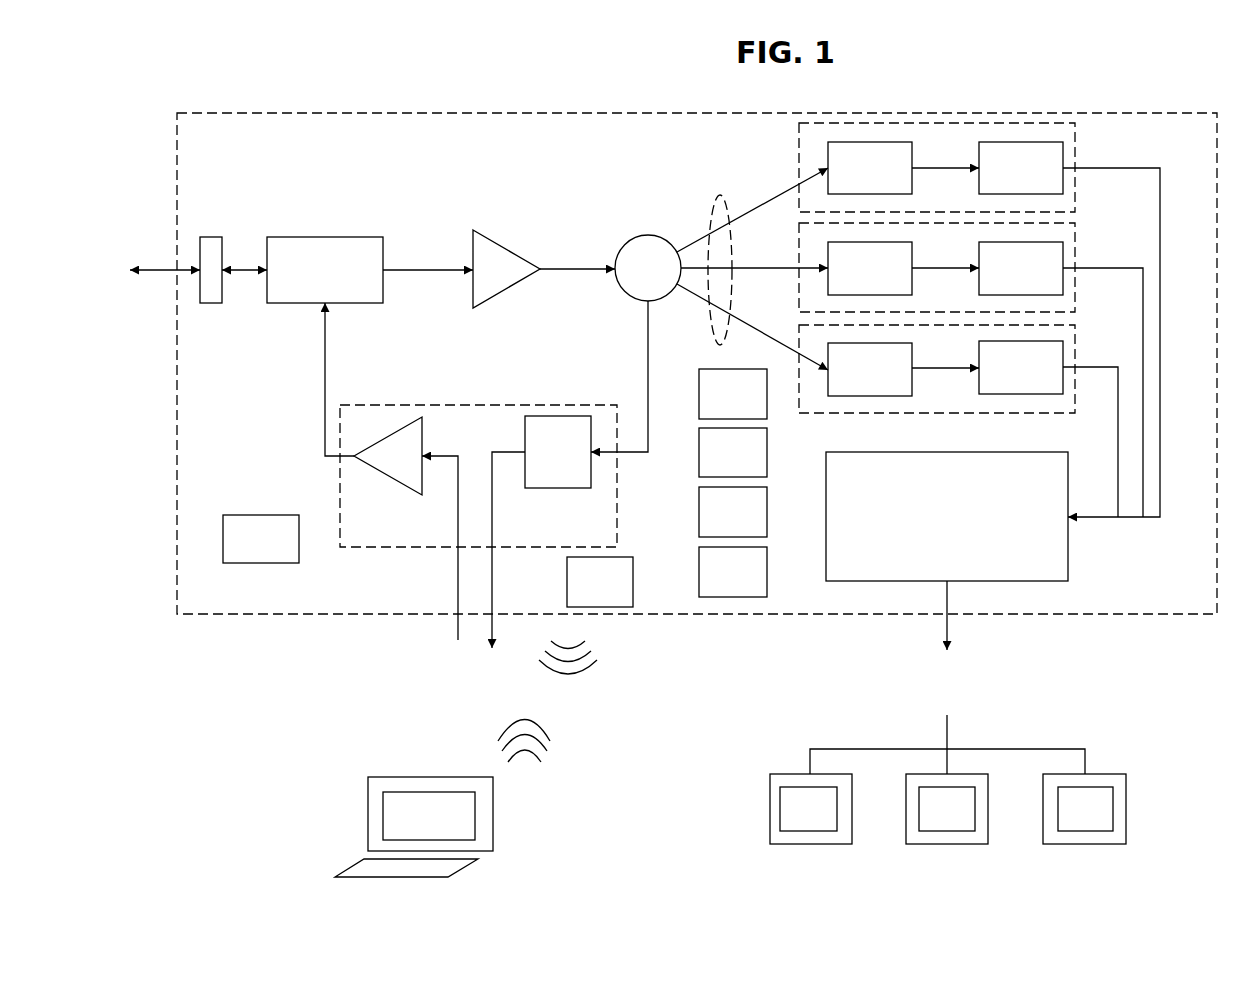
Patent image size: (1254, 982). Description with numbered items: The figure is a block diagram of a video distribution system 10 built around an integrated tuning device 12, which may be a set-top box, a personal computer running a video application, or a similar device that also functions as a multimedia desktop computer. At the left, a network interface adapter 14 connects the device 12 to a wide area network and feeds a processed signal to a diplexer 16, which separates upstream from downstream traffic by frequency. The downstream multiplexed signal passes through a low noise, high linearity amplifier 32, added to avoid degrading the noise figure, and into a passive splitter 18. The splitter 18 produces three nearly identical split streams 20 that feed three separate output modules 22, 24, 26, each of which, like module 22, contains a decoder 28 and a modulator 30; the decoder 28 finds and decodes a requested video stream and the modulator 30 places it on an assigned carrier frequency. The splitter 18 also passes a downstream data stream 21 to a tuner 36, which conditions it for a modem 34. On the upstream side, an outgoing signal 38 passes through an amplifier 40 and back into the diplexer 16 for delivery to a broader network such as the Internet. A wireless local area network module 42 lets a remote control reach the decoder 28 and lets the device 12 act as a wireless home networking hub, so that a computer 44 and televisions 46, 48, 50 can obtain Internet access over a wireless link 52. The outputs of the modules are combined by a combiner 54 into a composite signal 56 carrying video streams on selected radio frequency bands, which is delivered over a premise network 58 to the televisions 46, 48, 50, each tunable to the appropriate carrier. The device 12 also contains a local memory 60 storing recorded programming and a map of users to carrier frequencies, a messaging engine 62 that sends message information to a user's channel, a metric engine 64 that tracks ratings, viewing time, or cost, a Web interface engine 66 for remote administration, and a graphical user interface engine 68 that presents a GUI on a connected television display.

The video distribution system 10 is at (248, 706).
The integrated tuning device 12 is at (697, 363).
The network interface adapter 14 is at (224, 225).
The diplexer 16 is at (370, 270).
The splitter 18 is at (721, 269).
The split streams 20 is at (706, 207).
The downstream data stream 21 is at (640, 347).
The output module 22 is at (793, 161).
The output module 24 is at (793, 242).
The output module 26 is at (794, 326).
The decoder 28 is at (903, 168).
The modulator 30 is at (1069, 329).
The amplifier 32 is at (544, 269).
The modem 34 is at (478, 476).
The tuner 36 is at (541, 532).
The outgoing signal 38 is at (451, 596).
The amplifier 40 is at (373, 399).
The wireless local area network module 42 is at (600, 582).
The computer 44 is at (414, 827).
The television 46 is at (811, 809).
The television 48 is at (947, 809).
The television 50 is at (1084, 809).
The wireless link 52 is at (547, 701).
The combiner 54 is at (947, 516).
The composite signal 56 is at (933, 628).
The premise network 58 is at (935, 737).
The local memory 60 is at (733, 572).
The messaging engine 62 is at (733, 512).
The metric engine 64 is at (733, 452).
The Web interface engine 66 is at (733, 394).
The graphical user interface engine 68 is at (261, 539).